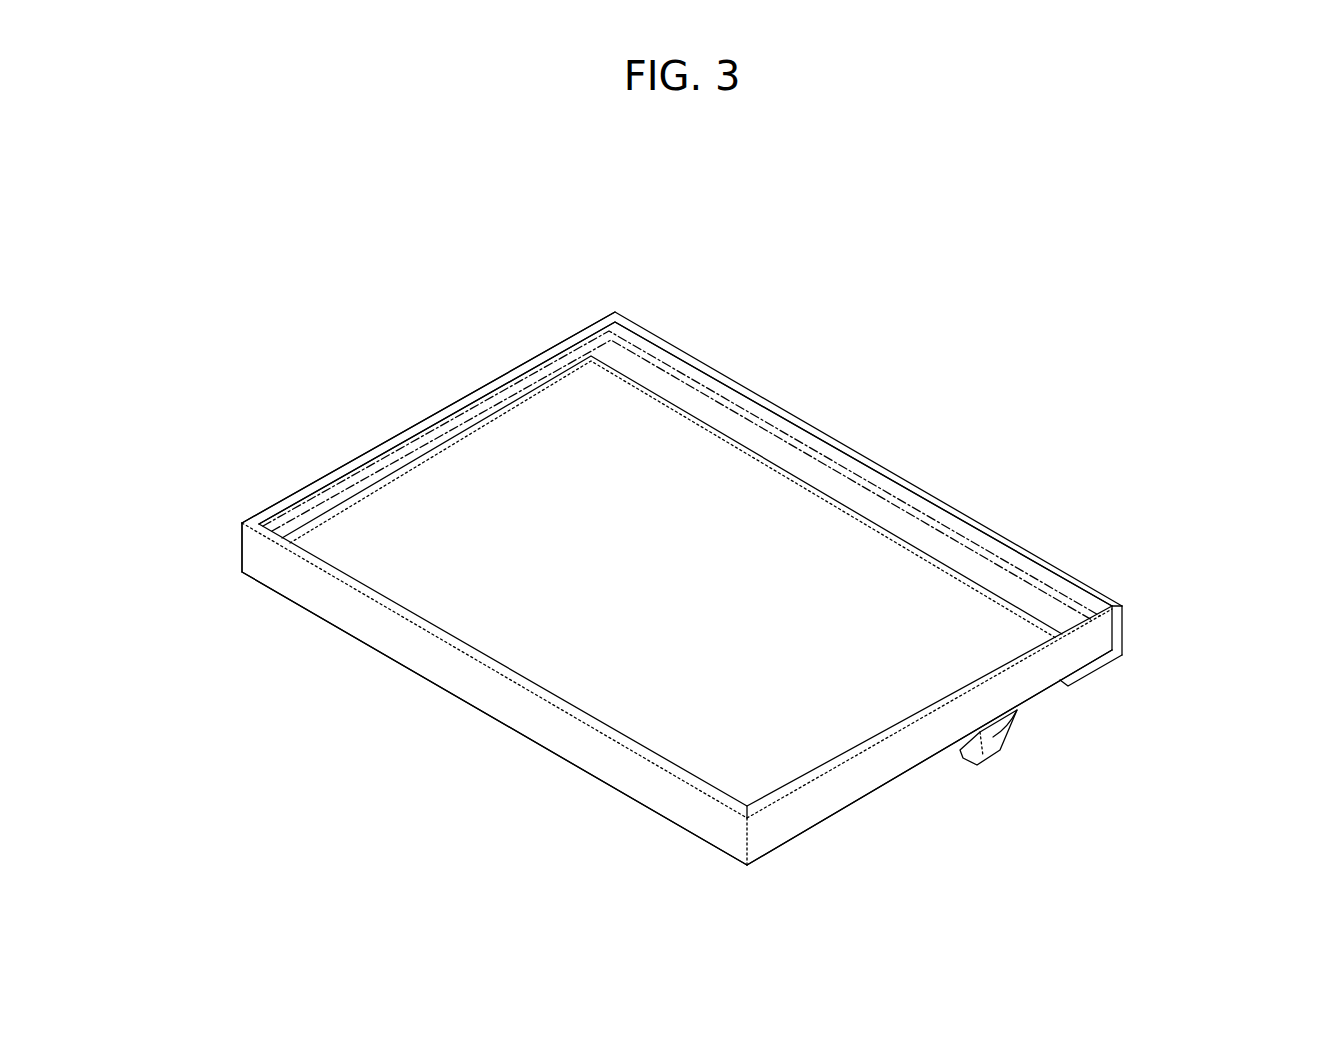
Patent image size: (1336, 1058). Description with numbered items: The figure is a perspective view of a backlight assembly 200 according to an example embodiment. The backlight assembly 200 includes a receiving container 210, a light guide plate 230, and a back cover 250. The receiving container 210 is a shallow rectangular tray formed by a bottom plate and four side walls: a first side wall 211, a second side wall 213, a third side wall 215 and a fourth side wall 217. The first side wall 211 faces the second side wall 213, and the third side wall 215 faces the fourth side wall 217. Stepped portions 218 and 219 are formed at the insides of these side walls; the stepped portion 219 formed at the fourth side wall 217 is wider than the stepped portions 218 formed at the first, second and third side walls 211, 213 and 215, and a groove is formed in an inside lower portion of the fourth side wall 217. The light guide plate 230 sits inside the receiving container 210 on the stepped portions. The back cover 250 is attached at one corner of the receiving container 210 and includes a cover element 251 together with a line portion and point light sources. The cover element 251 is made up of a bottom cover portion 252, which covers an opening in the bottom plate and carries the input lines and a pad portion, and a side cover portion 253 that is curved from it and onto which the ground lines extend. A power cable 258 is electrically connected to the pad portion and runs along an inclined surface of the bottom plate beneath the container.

The backlight assembly 200 is at (707, 220).
The receiving container 210 is at (233, 545).
The first side wall 211 is at (857, 783).
The second side wall 213 is at (372, 446).
The third side wall 215 is at (642, 780).
The fourth side wall 217 is at (865, 467).
The stepped portion 218 is at (459, 412).
The stepped portion 219 is at (778, 443).
The light guide plate 230 is at (668, 452).
The back cover 250 is at (1117, 605).
The cover element 251 is at (1167, 672).
The bottom cover portion 252 is at (1082, 672).
The side cover portion 253 is at (1125, 632).
The power cable 258 is at (1000, 722).